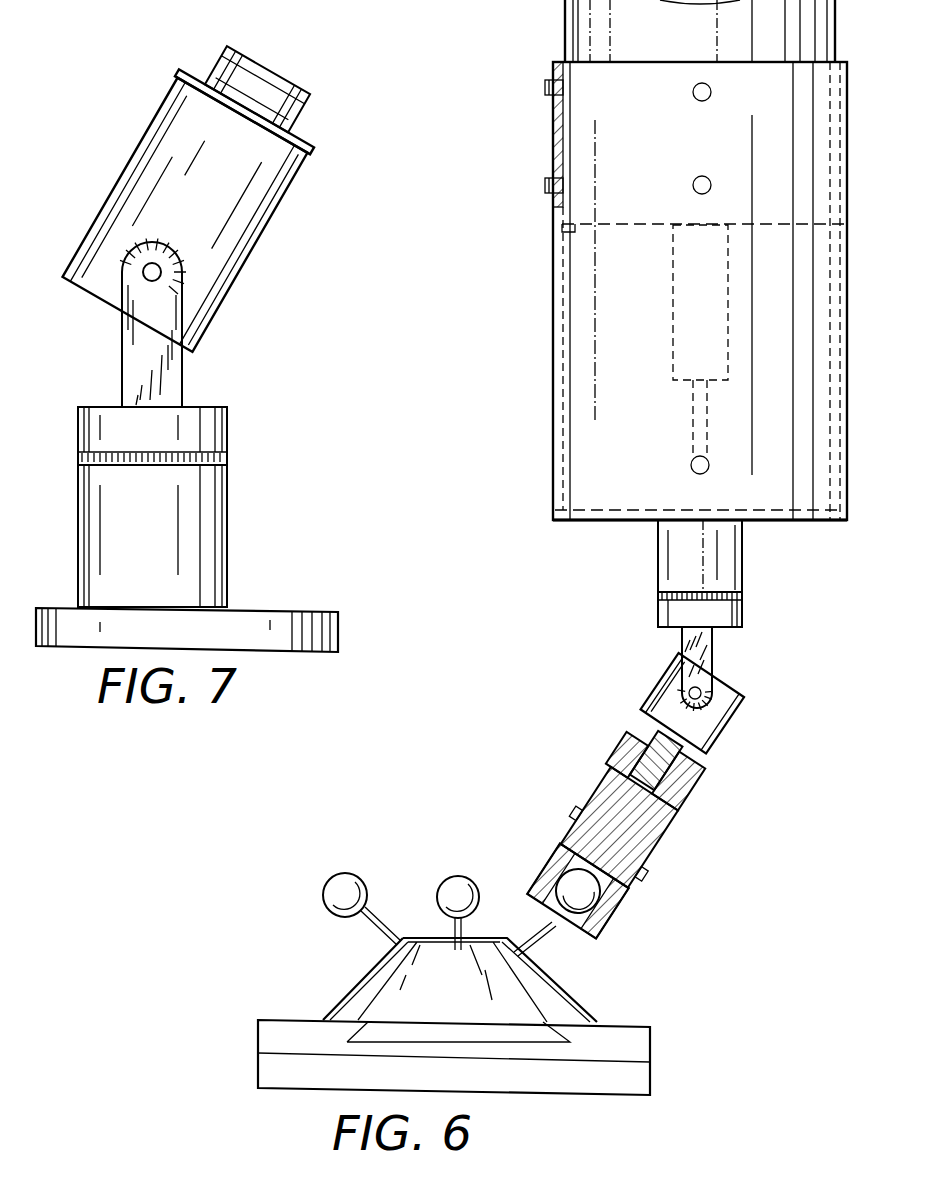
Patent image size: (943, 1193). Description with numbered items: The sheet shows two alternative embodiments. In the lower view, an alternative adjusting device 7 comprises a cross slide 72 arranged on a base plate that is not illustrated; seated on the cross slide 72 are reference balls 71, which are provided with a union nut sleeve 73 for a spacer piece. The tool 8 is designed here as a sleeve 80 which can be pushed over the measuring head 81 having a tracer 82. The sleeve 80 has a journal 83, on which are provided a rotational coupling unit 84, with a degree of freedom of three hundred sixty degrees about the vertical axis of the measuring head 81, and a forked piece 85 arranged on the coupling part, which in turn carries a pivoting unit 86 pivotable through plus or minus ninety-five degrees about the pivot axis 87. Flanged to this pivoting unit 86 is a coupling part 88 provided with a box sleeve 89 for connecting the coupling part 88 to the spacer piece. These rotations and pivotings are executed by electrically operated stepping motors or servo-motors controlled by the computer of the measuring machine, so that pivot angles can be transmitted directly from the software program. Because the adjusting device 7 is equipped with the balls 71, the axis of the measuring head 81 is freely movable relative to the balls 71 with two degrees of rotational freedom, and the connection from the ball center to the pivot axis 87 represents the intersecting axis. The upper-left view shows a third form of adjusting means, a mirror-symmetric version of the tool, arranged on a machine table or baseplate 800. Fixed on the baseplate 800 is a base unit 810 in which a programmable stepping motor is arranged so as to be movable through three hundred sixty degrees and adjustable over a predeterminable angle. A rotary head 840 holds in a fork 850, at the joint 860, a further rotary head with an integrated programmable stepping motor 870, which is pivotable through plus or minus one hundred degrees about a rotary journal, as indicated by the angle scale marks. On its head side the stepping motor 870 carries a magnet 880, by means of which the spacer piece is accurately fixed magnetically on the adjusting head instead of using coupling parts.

In FIG. 6, the adjusting device 7 is at (306, 941).
In FIG. 6, the tool 8 is at (772, 674).
In FIG. 6, the reference balls 71 is at (354, 904).
In FIG. 6, the cross slide 72 is at (265, 1070).
In FIG. 6, the union nut sleeve 73 is at (612, 920).
In FIG. 6, the sleeve 80 is at (582, 145).
In FIG. 6, the measuring head 81 is at (585, 22).
In FIG. 6, the tracer 82 is at (693, 405).
In FIG. 6, the journal 83 is at (672, 548).
In FIG. 6, the rotational coupling unit 84 is at (740, 617).
In FIG. 6, the forked piece 85 is at (687, 637).
In FIG. 6, the pivoting unit 86 is at (668, 690).
In FIG. 6, the pivot axis 87 is at (650, 720).
In FIG. 6, the coupling part 88 is at (690, 762).
In FIG. 6, the box sleeve 89 is at (612, 765).
In FIG. 7, the baseplate 800 is at (268, 622).
In FIG. 7, the base unit 810 is at (218, 508).
In FIG. 7, the rotary head 840 is at (218, 418).
In FIG. 7, the fork 850 is at (142, 372).
In FIG. 7, the joint 860 is at (138, 262).
In FIG. 7, the stepping motor 870 is at (185, 160).
In FIG. 7, the magnet 880 is at (245, 45).